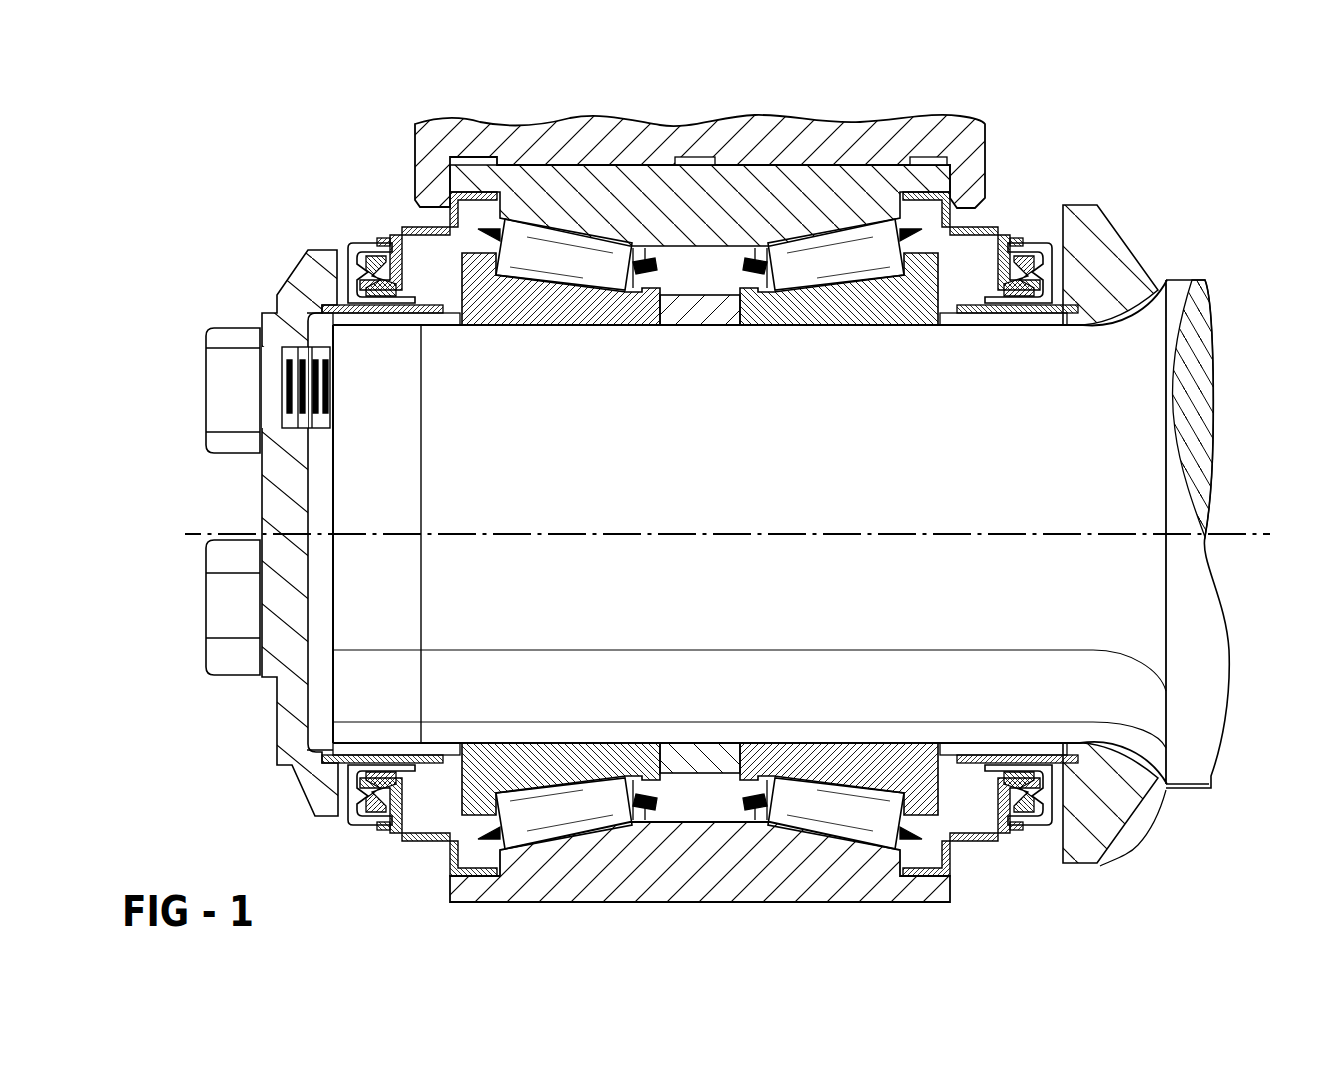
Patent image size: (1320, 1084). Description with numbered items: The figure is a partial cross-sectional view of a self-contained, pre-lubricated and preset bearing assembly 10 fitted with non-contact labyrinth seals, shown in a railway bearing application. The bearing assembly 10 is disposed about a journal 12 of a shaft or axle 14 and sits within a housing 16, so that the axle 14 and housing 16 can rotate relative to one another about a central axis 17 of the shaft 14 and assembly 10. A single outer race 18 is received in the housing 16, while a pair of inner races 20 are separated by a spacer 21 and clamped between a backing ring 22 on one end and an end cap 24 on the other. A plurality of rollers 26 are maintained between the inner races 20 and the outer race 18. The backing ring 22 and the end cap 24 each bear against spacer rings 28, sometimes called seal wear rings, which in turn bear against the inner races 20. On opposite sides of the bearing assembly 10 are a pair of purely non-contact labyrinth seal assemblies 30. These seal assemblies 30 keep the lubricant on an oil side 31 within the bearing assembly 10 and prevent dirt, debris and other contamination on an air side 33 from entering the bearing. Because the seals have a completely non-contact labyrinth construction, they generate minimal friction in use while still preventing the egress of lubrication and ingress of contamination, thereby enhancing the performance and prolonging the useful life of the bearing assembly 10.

The bearing assembly 10 is at (1020, 133).
The journal 12 is at (700, 745).
The shaft or axle 14 is at (1197, 759).
The housing 16 is at (527, 178).
The central axis 17 is at (1156, 534).
The outer race 18 is at (838, 905).
The inner races 20 is at (823, 325).
The spacer 21 is at (705, 325).
The backing ring 22 is at (1122, 235).
The end cap 24 is at (294, 263).
The rollers 26 is at (793, 245).
The spacer rings 28 is at (1018, 323).
The non-contact labyrinth seal assemblies 30 is at (1040, 199).
The oil side 31 is at (776, 485).
The air side 33 is at (1229, 205).